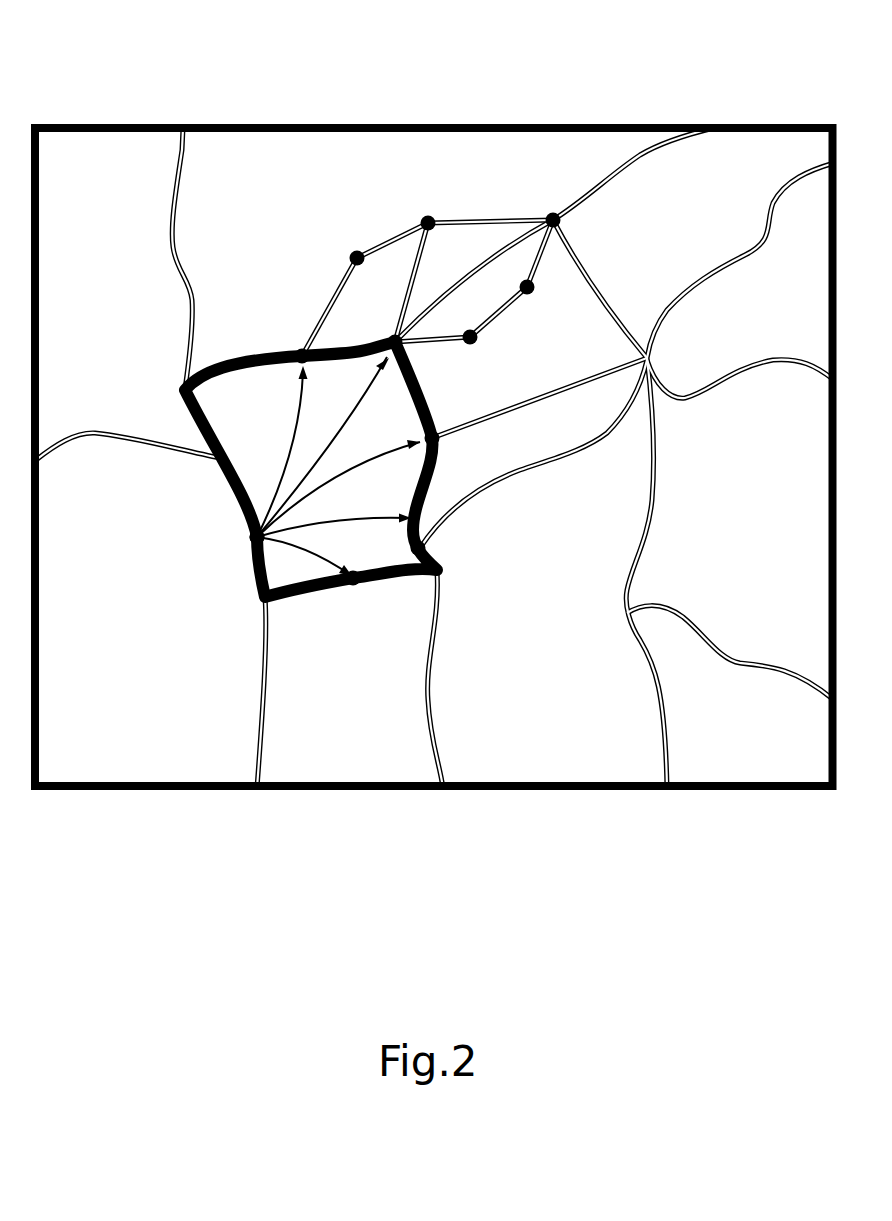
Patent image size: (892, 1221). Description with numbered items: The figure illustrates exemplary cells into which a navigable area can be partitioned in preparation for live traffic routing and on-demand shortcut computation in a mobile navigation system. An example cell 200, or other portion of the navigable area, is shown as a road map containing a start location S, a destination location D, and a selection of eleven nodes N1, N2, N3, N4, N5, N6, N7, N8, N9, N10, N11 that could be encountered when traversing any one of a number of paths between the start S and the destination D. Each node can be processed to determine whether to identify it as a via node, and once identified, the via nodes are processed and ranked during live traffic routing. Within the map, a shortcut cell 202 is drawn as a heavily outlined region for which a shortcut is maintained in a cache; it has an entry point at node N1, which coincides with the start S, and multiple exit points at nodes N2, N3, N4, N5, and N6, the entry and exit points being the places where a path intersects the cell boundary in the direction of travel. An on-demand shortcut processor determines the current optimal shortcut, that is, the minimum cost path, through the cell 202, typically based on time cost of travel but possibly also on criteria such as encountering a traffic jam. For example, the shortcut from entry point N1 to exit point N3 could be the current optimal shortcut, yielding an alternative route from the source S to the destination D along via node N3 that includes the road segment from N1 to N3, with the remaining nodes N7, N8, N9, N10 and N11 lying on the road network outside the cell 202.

The cell 200 is at (188, 97).
The shortcut cell 202 is at (76, 350).
The node N1 is at (237, 526).
The start location S is at (244, 551).
The node N2 is at (289, 344).
The node N3 is at (416, 357).
The node N4 is at (442, 452).
The node N5 is at (404, 543).
The node N6 is at (358, 597).
The node N7 is at (345, 245).
The node N8 is at (424, 206).
The node N9 is at (481, 349).
The node N10 is at (543, 295).
The node N11 is at (670, 354).
The destination location D is at (570, 233).